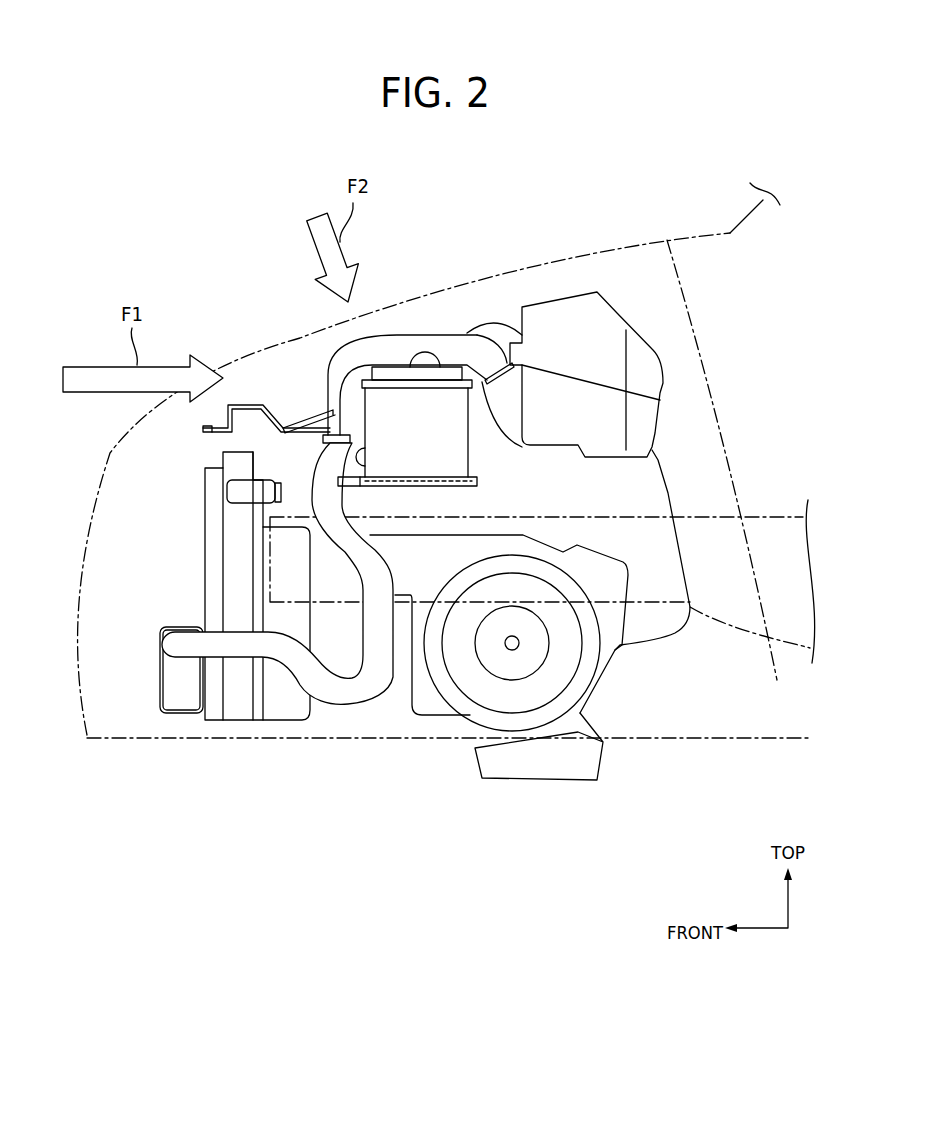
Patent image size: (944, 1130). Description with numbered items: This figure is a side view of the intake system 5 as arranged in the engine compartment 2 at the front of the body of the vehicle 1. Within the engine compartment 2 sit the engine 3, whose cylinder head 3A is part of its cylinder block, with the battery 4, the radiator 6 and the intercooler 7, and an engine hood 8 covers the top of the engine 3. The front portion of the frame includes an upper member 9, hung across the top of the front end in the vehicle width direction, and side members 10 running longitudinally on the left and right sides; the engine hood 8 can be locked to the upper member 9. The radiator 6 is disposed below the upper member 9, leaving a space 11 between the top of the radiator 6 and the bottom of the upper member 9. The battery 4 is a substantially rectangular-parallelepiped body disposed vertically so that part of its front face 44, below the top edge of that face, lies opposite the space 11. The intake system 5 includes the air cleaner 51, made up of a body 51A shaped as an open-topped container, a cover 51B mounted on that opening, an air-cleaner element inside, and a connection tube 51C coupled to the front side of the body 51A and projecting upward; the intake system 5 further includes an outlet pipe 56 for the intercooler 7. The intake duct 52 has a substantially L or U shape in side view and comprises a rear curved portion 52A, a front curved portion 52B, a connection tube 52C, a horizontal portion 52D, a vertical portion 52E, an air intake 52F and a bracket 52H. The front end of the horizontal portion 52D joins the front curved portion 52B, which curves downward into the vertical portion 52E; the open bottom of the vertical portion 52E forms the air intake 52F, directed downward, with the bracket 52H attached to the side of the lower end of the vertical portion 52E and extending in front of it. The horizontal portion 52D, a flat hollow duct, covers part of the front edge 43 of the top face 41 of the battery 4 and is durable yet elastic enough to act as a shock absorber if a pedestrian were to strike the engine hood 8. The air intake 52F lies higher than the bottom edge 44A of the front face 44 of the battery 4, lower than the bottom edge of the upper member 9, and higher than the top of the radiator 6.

The vehicle 1 is at (553, 145).
The engine compartment 2 is at (672, 230).
The engine 3 is at (670, 491).
The cylinder head 3A is at (650, 475).
The battery 4 is at (452, 447).
The intake system 5 is at (627, 285).
The radiator 6 is at (235, 570).
The intercooler 7 is at (157, 663).
The engine hood 8 is at (548, 258).
The upper member 9 is at (252, 407).
The side members 10 is at (765, 515).
The space 11 is at (235, 442).
The top face 41 is at (441, 367).
The front edge 43 is at (362, 363).
The front face 44 is at (362, 448).
The bottom edge 44A is at (405, 486).
The air cleaner 51 is at (660, 360).
The body 51A is at (607, 413).
The cover 51B is at (593, 327).
The connection tube 51C is at (495, 413).
The intake duct 52 is at (395, 333).
The rear curved portion 52A is at (482, 350).
The front curved portion 52B is at (350, 362).
The connection tube 52C is at (500, 360).
The horizontal portion 52D is at (443, 347).
The vertical portion 52E is at (333, 403).
The air intake 52F is at (325, 445).
The bracket 52H is at (308, 408).
The outlet pipe 56 is at (350, 693).